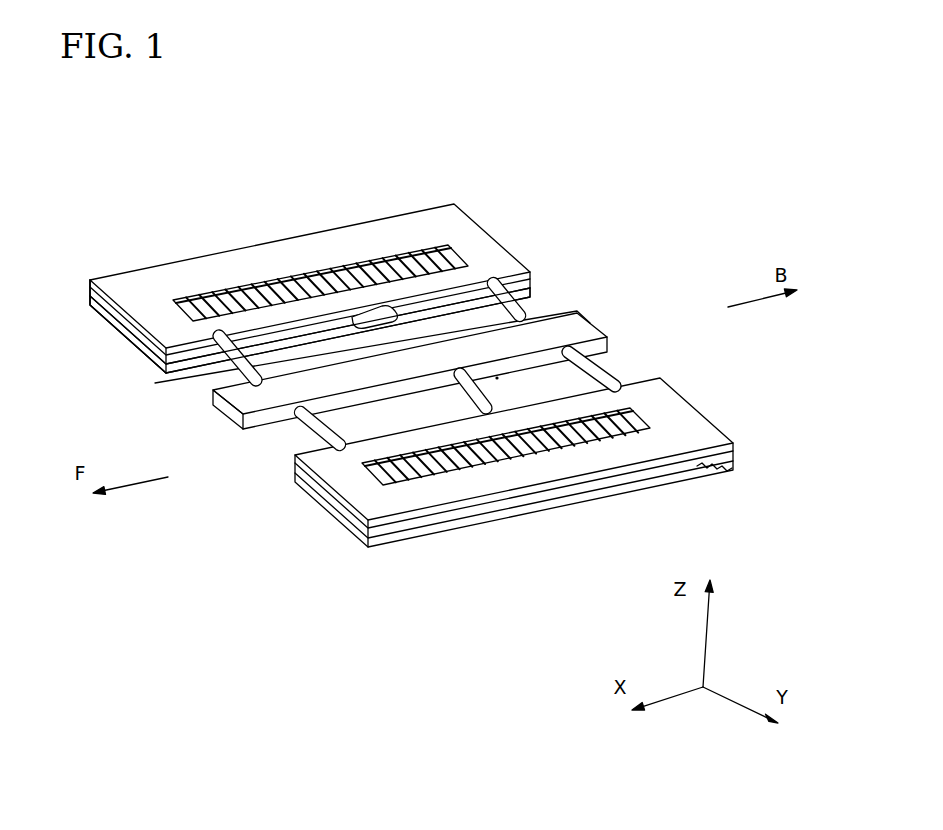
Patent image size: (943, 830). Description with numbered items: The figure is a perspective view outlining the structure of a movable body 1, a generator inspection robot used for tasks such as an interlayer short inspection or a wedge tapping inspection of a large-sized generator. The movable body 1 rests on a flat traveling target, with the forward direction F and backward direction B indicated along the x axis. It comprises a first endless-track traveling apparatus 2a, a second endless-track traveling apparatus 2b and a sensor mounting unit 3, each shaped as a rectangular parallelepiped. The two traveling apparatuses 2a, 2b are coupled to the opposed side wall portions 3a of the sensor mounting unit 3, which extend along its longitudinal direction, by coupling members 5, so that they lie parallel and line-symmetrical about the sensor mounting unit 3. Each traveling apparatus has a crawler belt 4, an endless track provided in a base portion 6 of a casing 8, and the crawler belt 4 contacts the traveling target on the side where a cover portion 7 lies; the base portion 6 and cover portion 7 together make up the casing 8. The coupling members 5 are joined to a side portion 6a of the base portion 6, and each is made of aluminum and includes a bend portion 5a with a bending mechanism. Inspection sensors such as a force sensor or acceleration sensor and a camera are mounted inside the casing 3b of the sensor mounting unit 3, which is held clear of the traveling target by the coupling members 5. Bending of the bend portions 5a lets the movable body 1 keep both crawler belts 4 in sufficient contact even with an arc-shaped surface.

The movable body 1 is at (594, 188).
The first endless-track traveling apparatus 2a is at (718, 428).
The second endless-track traveling apparatus 2b is at (478, 224).
The sensor mounting unit 3 is at (408, 387).
The side wall portions 3a is at (270, 420).
The casing 3b is at (220, 410).
The crawler belt 4 is at (322, 268).
The coupling members 5 is at (532, 306).
The bend portion 5a is at (300, 460).
The base portion 6 is at (122, 315).
The side portion 6a is at (157, 382).
The cover portion 7 is at (122, 340).
The casing 8 is at (55, 366).